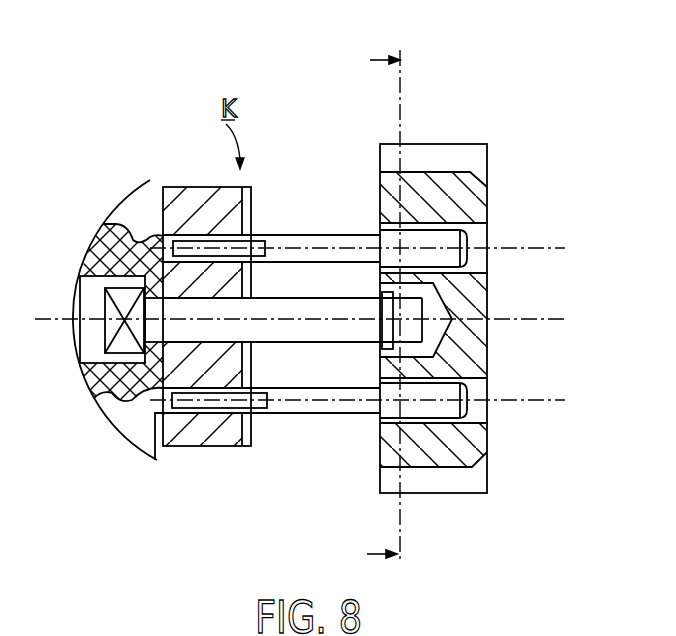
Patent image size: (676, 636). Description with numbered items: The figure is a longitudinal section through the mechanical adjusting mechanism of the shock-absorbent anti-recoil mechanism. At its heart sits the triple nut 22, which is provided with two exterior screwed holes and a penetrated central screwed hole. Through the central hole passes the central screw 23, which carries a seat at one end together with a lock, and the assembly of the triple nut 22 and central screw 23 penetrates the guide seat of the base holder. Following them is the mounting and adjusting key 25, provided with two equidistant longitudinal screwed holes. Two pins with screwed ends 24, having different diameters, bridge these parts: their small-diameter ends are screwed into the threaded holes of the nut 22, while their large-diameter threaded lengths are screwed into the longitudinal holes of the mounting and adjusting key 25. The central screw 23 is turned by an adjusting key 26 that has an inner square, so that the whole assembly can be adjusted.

The triple nut 22 is at (206, 205).
The central screw 23 is at (125, 308).
The pins with screwed ends 24 is at (333, 243).
The mounting and adjusting key 25 is at (478, 195).
The adjusting key 26 is at (108, 248).